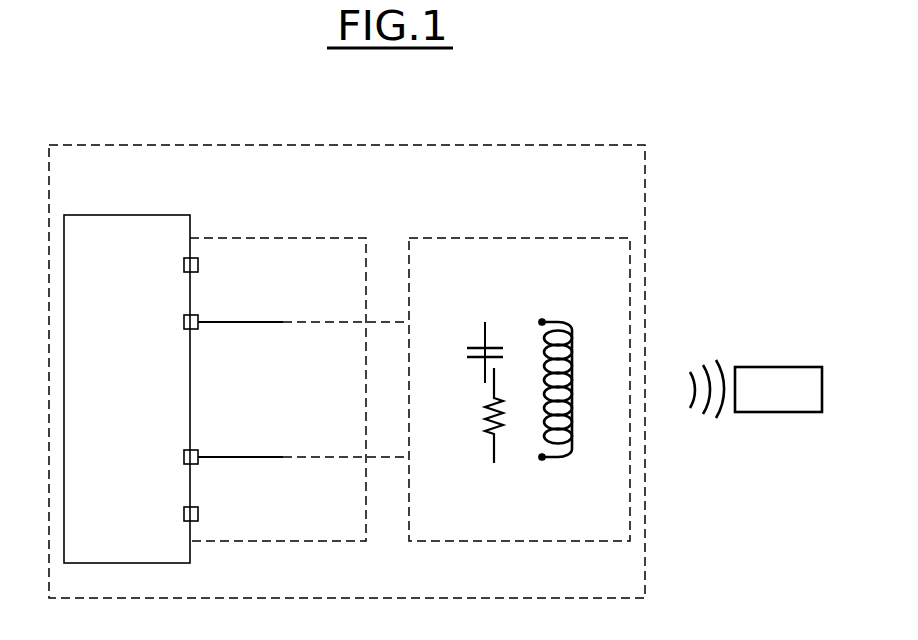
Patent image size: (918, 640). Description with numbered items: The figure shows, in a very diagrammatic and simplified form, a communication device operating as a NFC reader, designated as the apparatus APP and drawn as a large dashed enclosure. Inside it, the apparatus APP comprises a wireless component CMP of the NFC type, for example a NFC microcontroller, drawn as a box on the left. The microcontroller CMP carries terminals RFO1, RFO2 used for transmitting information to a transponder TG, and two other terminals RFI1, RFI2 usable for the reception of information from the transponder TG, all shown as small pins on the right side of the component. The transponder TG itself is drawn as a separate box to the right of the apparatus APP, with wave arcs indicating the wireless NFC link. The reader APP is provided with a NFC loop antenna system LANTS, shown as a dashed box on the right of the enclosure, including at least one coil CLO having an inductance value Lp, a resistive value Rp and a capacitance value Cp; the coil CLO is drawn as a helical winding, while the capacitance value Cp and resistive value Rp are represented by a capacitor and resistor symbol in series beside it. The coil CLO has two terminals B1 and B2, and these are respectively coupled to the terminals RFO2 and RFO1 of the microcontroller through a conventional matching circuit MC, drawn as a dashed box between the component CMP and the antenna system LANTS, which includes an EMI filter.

The apparatus APP is at (371, 145).
The wireless component CMP is at (127, 215).
The matching circuit MC is at (278, 237).
The NFC loop antenna system LANTS is at (497, 237).
The coil CLO is at (570, 310).
The coil terminal B2 is at (542, 319).
The coil terminal B1 is at (542, 461).
The capacitance value Cp is at (474, 352).
The resistive value Rp is at (475, 415).
The inductance value Lp is at (571, 389).
The transponder TG is at (756, 389).
The receive terminal RFI2 is at (167, 266).
The transmit terminal RFO2 is at (267, 323).
The transmit terminal RFO1 is at (267, 458).
The receive terminal RFI1 is at (167, 515).